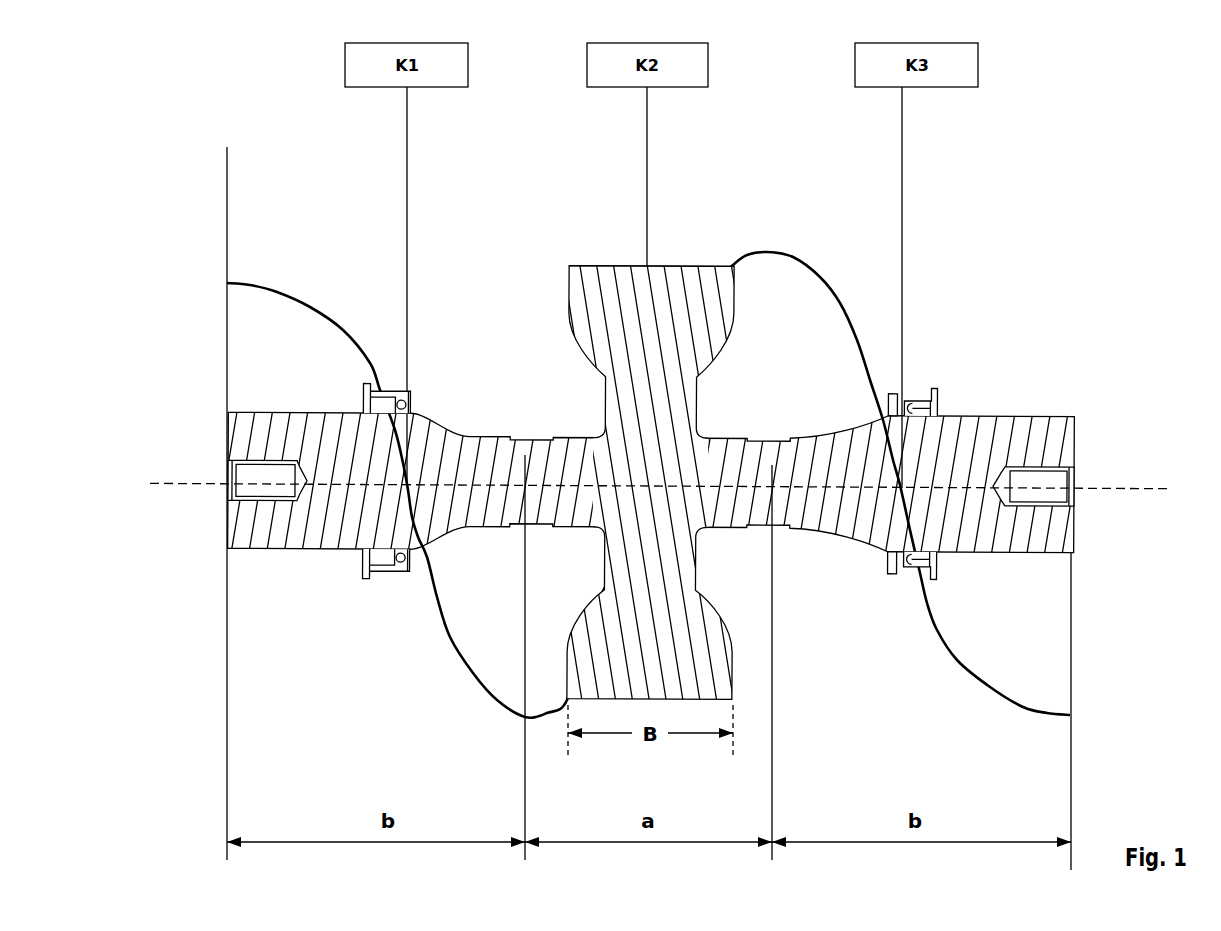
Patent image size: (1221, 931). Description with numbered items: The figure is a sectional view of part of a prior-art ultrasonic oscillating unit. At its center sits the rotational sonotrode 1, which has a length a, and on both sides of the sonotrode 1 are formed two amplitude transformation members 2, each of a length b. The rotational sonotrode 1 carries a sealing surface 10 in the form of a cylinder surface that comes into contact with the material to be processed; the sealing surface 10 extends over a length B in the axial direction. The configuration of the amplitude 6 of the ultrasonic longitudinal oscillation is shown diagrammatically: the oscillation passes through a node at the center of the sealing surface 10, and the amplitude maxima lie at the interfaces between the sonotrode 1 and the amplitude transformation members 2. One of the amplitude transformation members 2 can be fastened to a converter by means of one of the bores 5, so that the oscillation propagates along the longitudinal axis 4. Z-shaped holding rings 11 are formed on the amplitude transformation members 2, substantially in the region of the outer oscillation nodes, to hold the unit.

The rotational sonotrode 1 is at (605, 276).
The amplitude transformation member 2 is at (288, 425).
The longitudinal axis 4 is at (181, 491).
The bore 5 is at (226, 468).
The amplitude 6 is at (278, 290).
The sealing surface 10 is at (688, 264).
The Z-shaped holding ring 11 is at (384, 578).